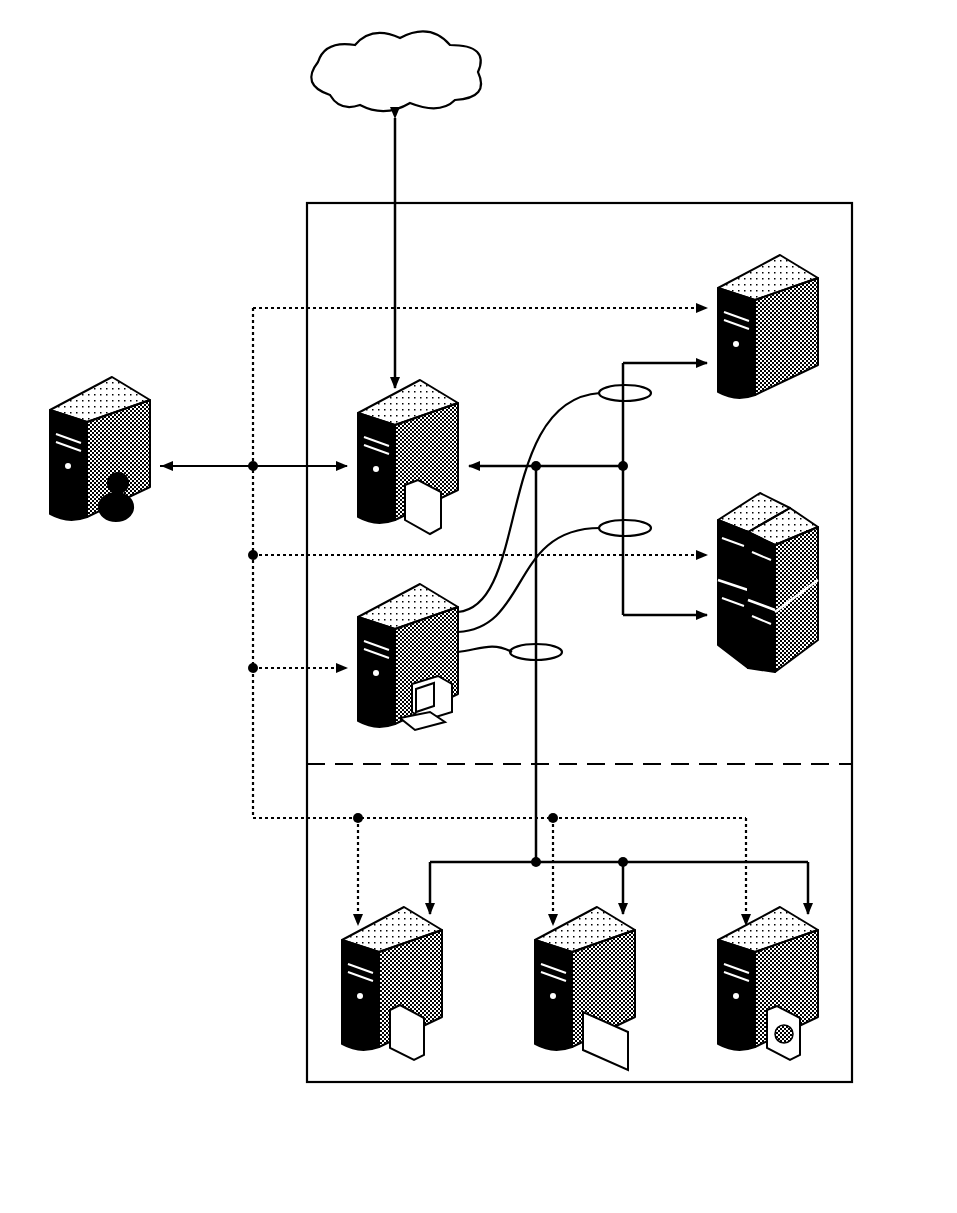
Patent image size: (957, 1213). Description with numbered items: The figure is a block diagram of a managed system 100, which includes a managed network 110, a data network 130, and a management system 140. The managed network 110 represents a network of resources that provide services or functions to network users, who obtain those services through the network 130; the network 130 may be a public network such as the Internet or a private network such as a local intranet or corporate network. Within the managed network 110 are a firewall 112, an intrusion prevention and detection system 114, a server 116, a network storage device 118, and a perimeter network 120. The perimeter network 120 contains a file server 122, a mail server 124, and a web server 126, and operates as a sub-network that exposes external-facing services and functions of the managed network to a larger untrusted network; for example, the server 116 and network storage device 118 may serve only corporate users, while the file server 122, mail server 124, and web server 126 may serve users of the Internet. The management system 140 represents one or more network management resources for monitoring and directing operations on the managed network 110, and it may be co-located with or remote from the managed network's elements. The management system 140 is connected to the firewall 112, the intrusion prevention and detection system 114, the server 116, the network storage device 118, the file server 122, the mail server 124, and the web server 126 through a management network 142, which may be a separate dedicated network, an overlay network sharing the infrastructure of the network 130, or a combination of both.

The managed system 100 is at (184, 1107).
The managed network 110 is at (318, 203).
The firewall 112 is at (378, 400).
The intrusion prevention and detection system 114 is at (386, 602).
The server 116 is at (745, 276).
The network storage device 118 is at (745, 506).
The perimeter network 120 is at (579, 778).
The file server 122 is at (443, 958).
The mail server 124 is at (637, 960).
The web server 126 is at (718, 974).
The data network 130 is at (388, 36).
The management system 140 is at (72, 397).
The management network 142 is at (262, 308).